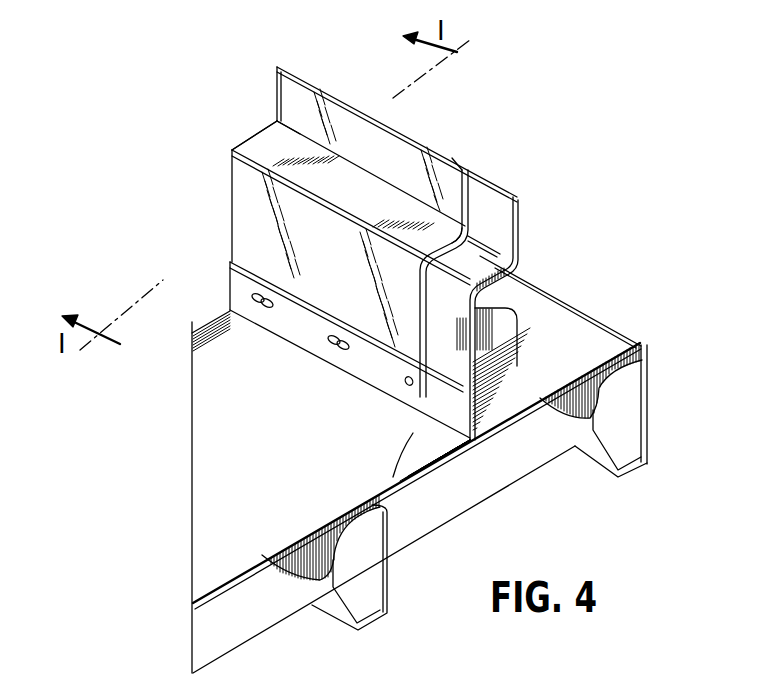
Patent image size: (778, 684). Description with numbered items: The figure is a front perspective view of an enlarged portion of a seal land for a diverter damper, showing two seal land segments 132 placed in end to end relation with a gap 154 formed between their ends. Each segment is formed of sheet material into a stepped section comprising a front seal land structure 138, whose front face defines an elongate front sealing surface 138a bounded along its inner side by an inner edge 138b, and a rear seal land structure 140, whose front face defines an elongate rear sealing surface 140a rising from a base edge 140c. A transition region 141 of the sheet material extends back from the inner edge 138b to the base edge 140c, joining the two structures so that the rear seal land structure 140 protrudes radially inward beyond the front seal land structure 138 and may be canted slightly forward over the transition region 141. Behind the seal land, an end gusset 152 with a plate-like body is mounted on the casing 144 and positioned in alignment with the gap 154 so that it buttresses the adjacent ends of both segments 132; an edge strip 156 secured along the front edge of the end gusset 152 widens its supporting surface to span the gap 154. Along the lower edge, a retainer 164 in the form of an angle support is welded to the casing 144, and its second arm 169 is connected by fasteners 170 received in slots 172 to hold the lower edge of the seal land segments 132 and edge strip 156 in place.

The seal land segment 132 is at (440, 151).
The front seal land structure 138 is at (276, 319).
The front sealing surface 138a is at (253, 223).
The inner edge 138b is at (233, 149).
The rear seal land structure 140 is at (367, 226).
The rear sealing surface 140a is at (313, 110).
The base edge 140c is at (267, 140).
The transition region 141 is at (262, 128).
The casing 144 is at (500, 400).
The end gusset 152 is at (517, 339).
The gap 154 is at (473, 173).
The edge strip 156 is at (451, 158).
The retainer 164 is at (228, 283).
The second arm 169 is at (300, 320).
The fastener 170 is at (343, 343).
The slot 172 is at (345, 347).